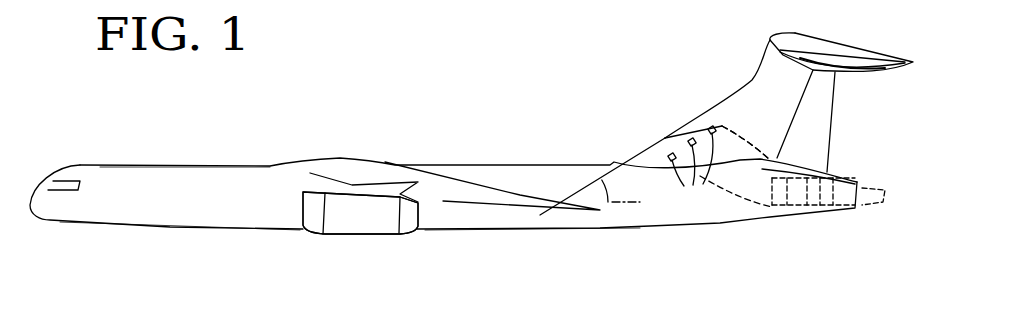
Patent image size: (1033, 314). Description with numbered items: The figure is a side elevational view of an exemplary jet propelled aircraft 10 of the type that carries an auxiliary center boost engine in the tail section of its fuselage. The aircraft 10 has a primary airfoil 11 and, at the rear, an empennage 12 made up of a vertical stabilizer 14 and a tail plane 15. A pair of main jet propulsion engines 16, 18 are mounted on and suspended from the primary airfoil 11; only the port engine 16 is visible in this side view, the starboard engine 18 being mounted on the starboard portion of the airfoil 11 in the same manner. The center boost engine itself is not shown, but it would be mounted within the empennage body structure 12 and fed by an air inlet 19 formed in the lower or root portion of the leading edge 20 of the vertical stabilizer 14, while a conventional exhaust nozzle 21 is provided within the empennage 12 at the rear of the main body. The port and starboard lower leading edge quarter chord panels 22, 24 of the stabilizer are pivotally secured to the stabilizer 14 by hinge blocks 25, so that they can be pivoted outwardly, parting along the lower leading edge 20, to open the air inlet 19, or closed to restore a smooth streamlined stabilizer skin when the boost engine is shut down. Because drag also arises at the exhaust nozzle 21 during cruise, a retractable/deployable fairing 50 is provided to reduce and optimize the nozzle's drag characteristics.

The jet propelled aircraft 10 is at (345, 121).
The primary airfoil 11 is at (436, 187).
The empennage 12 is at (840, 147).
The vertical stabilizer 14 is at (756, 86).
The tail plane 15 is at (832, 52).
The port main jet propulsion engine 16 is at (363, 234).
The starboard main jet propulsion engine 18 is at (360, 213).
The air inlet 19 is at (636, 133).
The leading edge 20 is at (706, 111).
The exhaust nozzle 21 is at (859, 192).
The port lower leading edge quarter chord panel 22 is at (675, 142).
The starboard lower leading edge quarter chord panel 24 is at (746, 143).
The hinge blocks 25 is at (692, 167).
The retractable/deployable fairing 50 is at (869, 205).